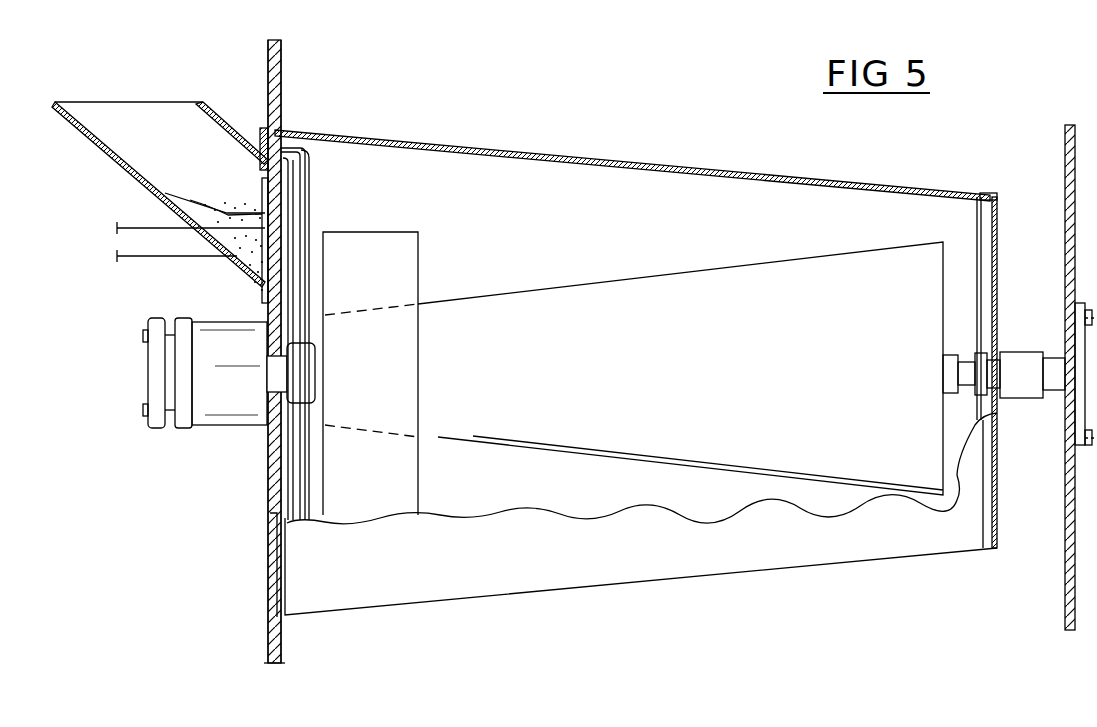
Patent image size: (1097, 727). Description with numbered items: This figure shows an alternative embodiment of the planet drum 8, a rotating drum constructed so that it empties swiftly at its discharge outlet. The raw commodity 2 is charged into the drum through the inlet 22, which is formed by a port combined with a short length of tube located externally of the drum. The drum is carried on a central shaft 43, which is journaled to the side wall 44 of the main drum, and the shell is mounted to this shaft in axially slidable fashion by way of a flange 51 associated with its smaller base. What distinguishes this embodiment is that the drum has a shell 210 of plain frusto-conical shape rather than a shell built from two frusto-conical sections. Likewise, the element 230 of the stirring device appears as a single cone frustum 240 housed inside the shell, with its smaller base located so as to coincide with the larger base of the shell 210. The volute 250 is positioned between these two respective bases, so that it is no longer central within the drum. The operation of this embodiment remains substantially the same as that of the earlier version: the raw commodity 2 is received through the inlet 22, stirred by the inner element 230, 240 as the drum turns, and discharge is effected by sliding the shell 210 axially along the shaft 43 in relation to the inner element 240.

The raw commodity 2 is at (165, 193).
The planet drum 8 is at (700, 155).
The inlet 22 is at (137, 135).
The central shaft 43 is at (275, 377).
The side wall 44 is at (277, 630).
The flange 51 is at (998, 243).
The shell 210 is at (582, 158).
The element of the stirring device 230 is at (427, 285).
The cone frustum 240 is at (647, 278).
The volute 250 is at (383, 250).